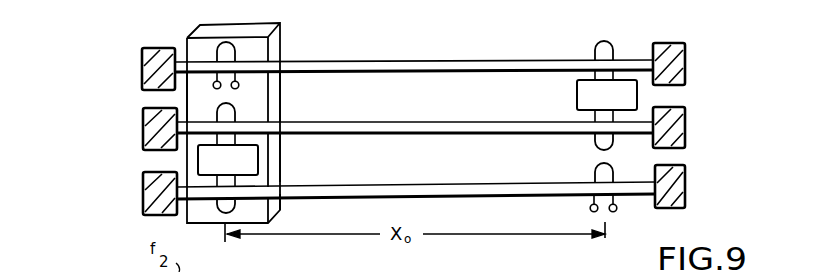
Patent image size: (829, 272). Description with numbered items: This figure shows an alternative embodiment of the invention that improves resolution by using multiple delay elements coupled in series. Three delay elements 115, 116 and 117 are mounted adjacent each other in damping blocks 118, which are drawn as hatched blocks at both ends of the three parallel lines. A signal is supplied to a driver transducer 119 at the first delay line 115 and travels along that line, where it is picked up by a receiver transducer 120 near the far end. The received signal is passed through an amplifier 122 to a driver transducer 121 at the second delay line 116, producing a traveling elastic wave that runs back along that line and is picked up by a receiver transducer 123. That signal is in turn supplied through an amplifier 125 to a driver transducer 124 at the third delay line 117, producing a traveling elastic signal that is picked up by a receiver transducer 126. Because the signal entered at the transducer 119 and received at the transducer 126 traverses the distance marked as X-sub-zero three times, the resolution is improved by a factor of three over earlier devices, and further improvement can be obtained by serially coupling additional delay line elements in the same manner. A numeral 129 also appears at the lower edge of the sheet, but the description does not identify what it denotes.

The delay element 115 is at (372, 62).
The delay element 116 is at (357, 122).
The delay element 117 is at (370, 182).
The damping blocks 118 is at (143, 193).
The driver transducer 119 is at (237, 53).
The receiver transducer 120 is at (597, 46).
The driver transducer 121 is at (596, 143).
The amplifier 122 is at (577, 91).
The receiver transducer 123 is at (237, 113).
The driver transducer 124 is at (268, 205).
The amplifier 125 is at (258, 162).
The receiver transducer 126 is at (594, 173).
The housing 129 is at (62, 264).